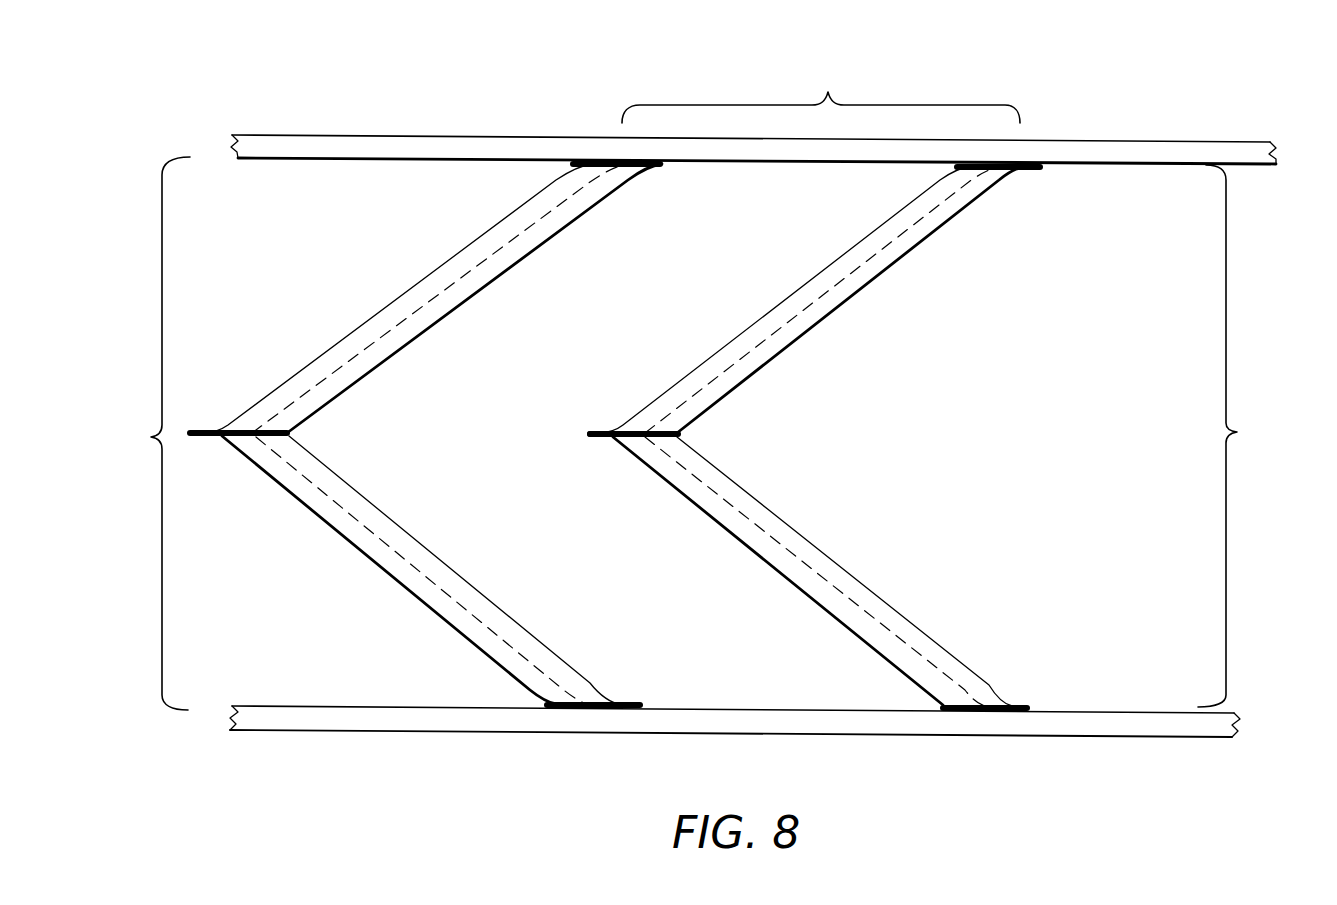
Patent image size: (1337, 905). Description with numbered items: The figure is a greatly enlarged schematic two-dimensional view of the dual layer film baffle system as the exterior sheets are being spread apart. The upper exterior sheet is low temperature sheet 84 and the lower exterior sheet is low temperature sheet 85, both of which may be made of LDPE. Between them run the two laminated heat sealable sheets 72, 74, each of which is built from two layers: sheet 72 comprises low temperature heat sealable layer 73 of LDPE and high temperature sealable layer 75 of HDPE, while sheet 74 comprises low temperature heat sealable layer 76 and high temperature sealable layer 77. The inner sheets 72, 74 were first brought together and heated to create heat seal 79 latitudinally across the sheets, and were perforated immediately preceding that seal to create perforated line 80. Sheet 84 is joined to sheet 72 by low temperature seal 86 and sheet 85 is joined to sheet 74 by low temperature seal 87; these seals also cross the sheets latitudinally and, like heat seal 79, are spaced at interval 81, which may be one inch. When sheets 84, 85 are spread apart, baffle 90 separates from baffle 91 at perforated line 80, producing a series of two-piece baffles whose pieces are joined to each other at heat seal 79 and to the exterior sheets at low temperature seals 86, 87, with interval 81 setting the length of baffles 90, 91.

The heat sealable sheet 72 is at (870, 284).
The low temperature heat sealable layer 73 is at (777, 306).
The heat sealable sheet 74 is at (858, 569).
The high temperature sealable layer 75 is at (832, 309).
The low temperature heat sealable layer 76 is at (760, 555).
The high temperature sealable layer 77 is at (800, 543).
The heat seal 79 is at (680, 436).
The perforated line 80 is at (590, 437).
The interval 81 is at (828, 92).
The low temperature sheet 84 is at (537, 145).
The low temperature sheet 85 is at (530, 725).
The low temperature seal 86 is at (1018, 165).
The low temperature seal 87 is at (985, 714).
The baffle 90 is at (1238, 432).
The baffle 91 is at (152, 437).